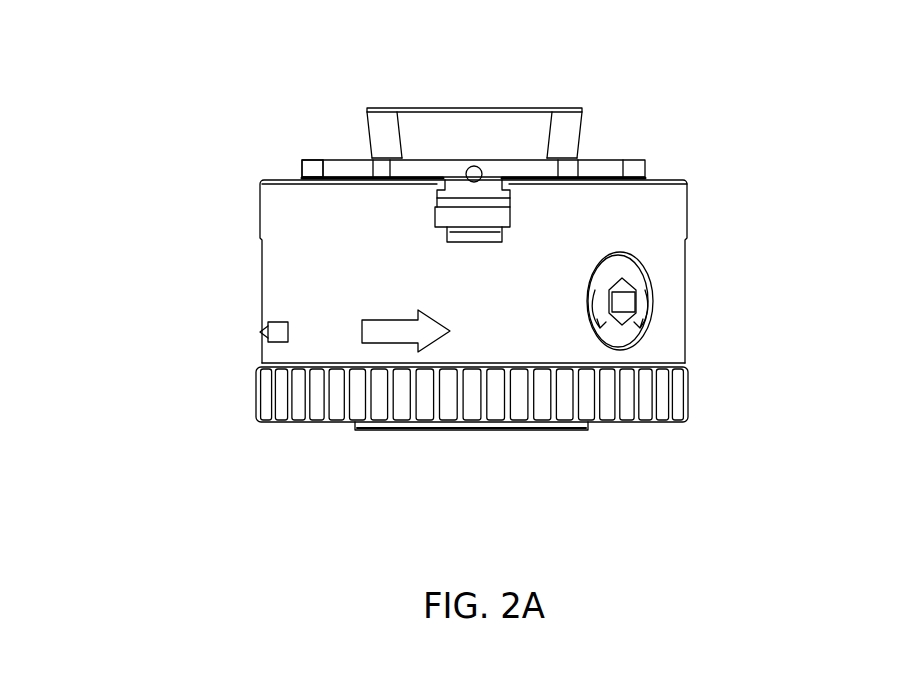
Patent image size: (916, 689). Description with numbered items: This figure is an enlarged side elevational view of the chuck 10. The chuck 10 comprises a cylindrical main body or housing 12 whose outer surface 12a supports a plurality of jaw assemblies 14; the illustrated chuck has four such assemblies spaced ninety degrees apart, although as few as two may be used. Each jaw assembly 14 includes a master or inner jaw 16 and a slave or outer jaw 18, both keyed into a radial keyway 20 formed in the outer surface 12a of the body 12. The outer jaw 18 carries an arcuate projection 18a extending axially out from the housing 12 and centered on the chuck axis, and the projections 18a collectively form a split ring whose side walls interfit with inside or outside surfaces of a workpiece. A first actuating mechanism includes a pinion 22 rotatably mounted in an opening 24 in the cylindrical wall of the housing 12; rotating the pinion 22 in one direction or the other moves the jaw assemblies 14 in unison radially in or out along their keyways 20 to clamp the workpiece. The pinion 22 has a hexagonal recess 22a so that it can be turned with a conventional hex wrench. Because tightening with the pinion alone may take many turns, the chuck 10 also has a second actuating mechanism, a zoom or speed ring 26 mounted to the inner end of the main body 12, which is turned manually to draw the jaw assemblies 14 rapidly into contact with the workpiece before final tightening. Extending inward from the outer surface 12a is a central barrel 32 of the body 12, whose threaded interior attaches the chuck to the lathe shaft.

The chuck 10 is at (198, 203).
The main body 12 is at (688, 350).
The outer surface 12a is at (680, 174).
The jaw assembly 14 is at (513, 110).
The inner jaw 16 is at (444, 213).
The outer jaw 18 is at (505, 195).
The arcuate projection 18a is at (367, 112).
The radial keyway 20 is at (486, 232).
The pinion 22 is at (652, 270).
The hexagonal recess 22a is at (618, 300).
The opening 24 is at (596, 263).
The zoom ring 26 is at (693, 387).
The central barrel 32 is at (487, 430).